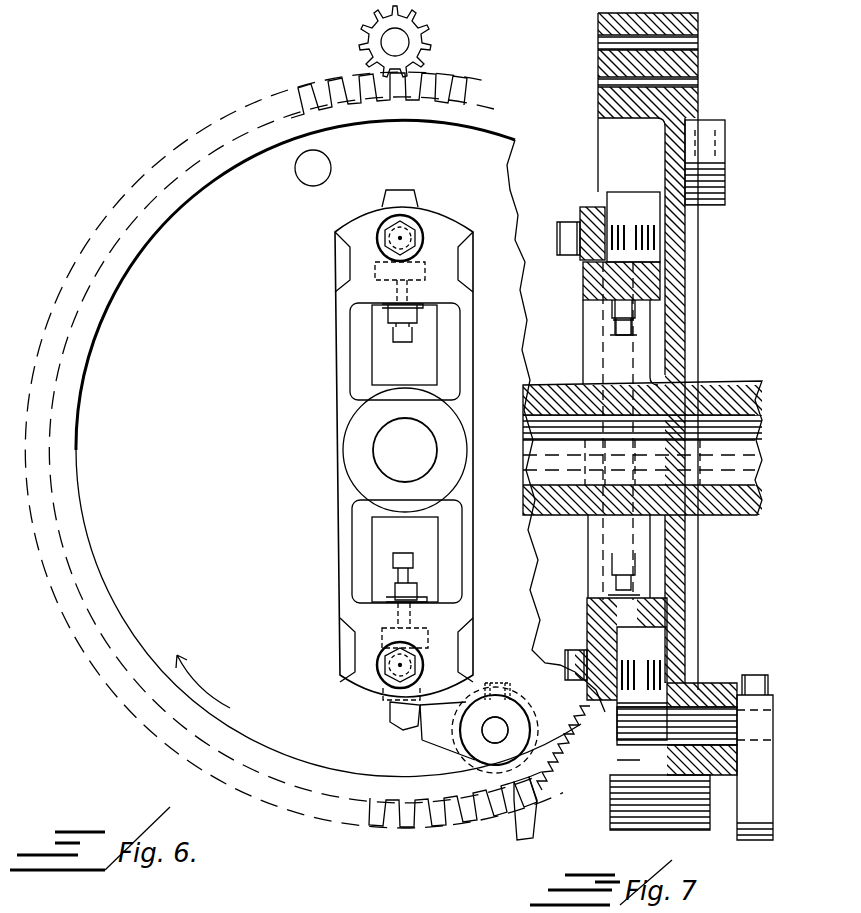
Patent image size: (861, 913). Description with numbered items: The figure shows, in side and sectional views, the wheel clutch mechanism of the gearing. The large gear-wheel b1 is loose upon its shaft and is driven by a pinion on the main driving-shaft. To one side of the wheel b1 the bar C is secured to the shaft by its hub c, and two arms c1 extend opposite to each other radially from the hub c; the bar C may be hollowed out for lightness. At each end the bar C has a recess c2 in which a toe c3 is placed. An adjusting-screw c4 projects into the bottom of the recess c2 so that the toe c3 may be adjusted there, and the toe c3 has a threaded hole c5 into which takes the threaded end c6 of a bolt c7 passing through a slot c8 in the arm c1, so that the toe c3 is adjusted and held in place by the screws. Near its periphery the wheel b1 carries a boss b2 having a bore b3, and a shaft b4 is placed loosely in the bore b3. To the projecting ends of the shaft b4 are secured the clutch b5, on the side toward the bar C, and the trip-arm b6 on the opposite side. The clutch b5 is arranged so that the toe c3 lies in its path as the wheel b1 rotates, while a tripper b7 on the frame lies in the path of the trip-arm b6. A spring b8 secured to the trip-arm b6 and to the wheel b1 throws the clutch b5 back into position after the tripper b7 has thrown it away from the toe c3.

In FIG. 6, the gear-wheel b1 is at (315, 450).
In FIG. 7, the gear-wheel b1 is at (669, 351).
In FIG. 6, the bar C is at (415, 452).
In FIG. 6, the arms c1 is at (436, 445).
In FIG. 7, the hub c is at (642, 431).
In FIG. 7, the recess c2 is at (618, 215).
In FIG. 6, the toe c3 is at (392, 714).
In FIG. 7, the toe c3 is at (621, 232).
In FIG. 7, the adjusting-screw c4 is at (612, 312).
In FIG. 7, the threaded hole c5 is at (660, 232).
In FIG. 7, the threaded end c6 is at (660, 290).
In FIG. 7, the bolt c7 is at (557, 449).
In FIG. 7, the slot c8 is at (580, 215).
In FIG. 7, the boss b2 is at (700, 672).
In FIG. 7, the bore b3 is at (725, 775).
In FIG. 7, the shaft b4 is at (677, 726).
In FIG. 6, the clutch b5 is at (440, 735).
In FIG. 6, the trip-arm b6 is at (522, 826).
In FIG. 7, the trip-arm b6 is at (769, 757).
In FIG. 6, the tripper b7 is at (495, 730).
In FIG. 6, the spring b8 is at (568, 748).